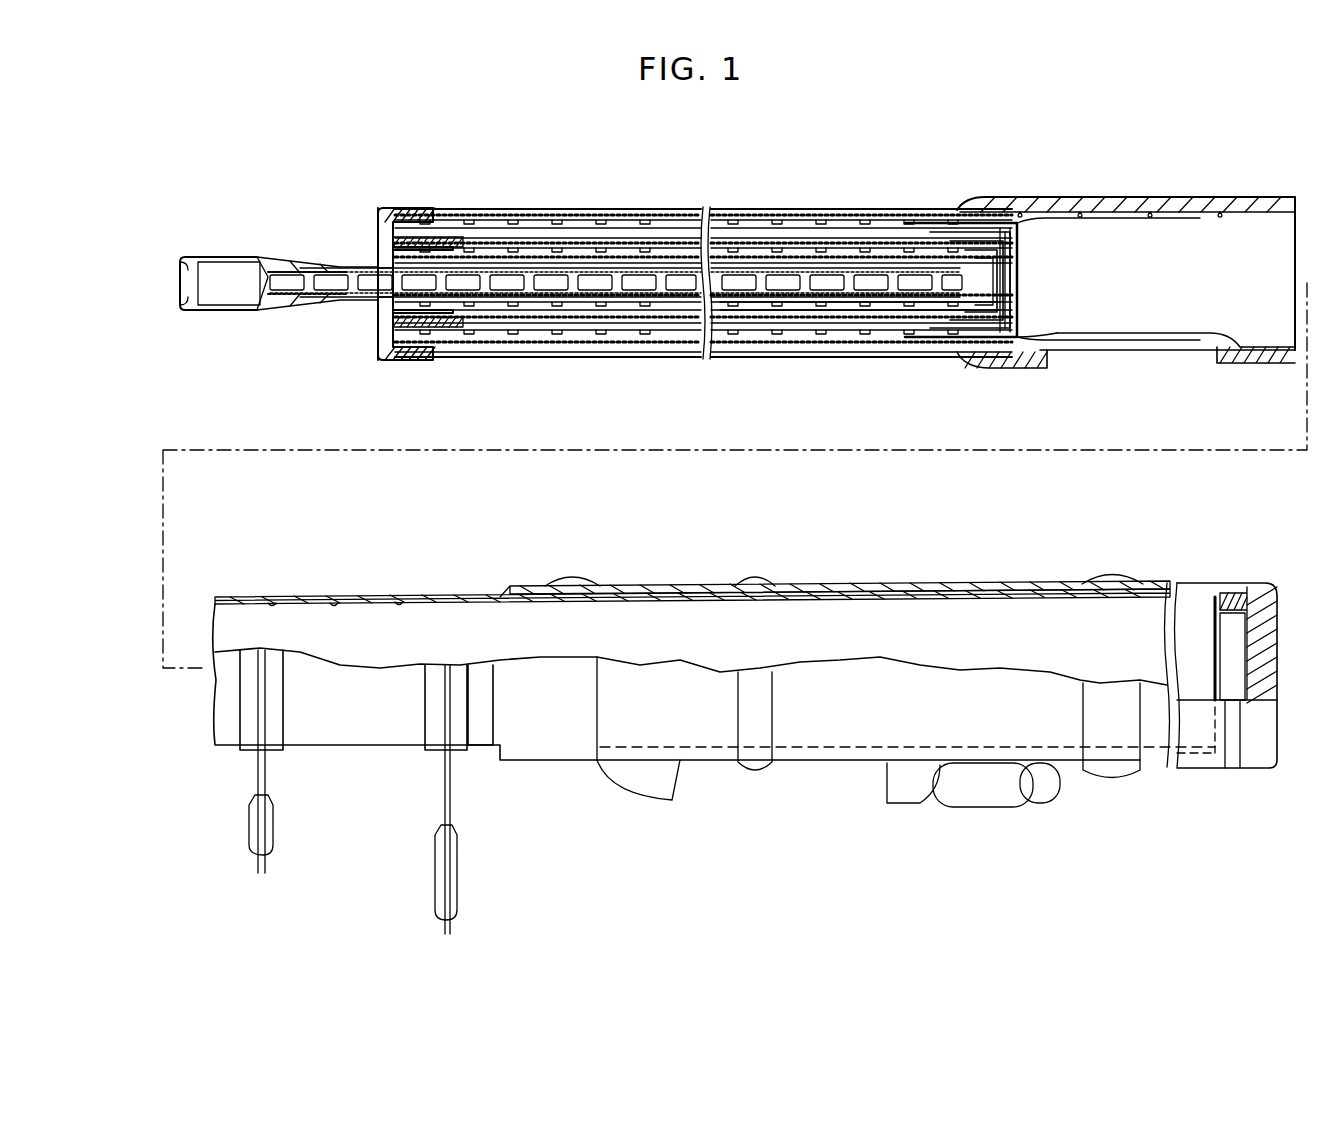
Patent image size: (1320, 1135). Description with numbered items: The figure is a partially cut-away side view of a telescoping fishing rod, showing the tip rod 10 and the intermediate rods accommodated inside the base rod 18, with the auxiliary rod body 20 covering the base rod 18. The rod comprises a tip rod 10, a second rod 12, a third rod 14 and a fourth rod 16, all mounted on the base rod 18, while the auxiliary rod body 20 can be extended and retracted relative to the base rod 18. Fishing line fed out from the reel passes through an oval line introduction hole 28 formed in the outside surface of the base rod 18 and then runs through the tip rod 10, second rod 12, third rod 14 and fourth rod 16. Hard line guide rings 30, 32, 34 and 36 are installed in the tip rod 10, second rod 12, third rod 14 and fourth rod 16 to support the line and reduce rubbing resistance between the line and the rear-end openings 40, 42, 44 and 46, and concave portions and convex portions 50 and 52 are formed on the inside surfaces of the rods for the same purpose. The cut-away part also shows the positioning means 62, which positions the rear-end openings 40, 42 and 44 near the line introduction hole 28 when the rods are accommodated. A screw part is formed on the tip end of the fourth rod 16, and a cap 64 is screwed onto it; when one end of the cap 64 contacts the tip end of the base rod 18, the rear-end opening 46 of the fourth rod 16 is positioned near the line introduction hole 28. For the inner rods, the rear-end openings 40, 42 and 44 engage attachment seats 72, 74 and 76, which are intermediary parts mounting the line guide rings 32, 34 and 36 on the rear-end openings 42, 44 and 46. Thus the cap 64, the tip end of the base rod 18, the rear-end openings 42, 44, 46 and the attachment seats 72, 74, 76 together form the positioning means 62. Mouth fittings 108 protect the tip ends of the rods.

The tip rod 10 is at (372, 264).
The second rod 12 is at (527, 238).
The third rod 14 is at (570, 240).
The fourth rod 16 is at (614, 232).
The base rod 18 is at (663, 213).
The auxiliary rod body 20 is at (907, 583).
The line introduction hole 28 is at (1143, 348).
The line guide ring 30 is at (1017, 310).
The line guide ring 32 is at (1013, 243).
The line guide ring 34 is at (1020, 232).
The line guide ring 36 is at (1041, 213).
The rear-end opening 40 is at (1023, 248).
The rear-end opening 42 is at (985, 277).
The rear-end opening 44 is at (1000, 287).
The rear-end opening 46 is at (1020, 303).
The concave portion 50 is at (757, 340).
The convex portion 52 is at (793, 262).
The positioning means 62 is at (373, 353).
The cap 64 is at (397, 208).
The attachment seat 72 is at (912, 235).
The attachment seat 74 is at (925, 240).
The attachment seat 76 is at (968, 243).
The mouth fitting 108 is at (392, 327).